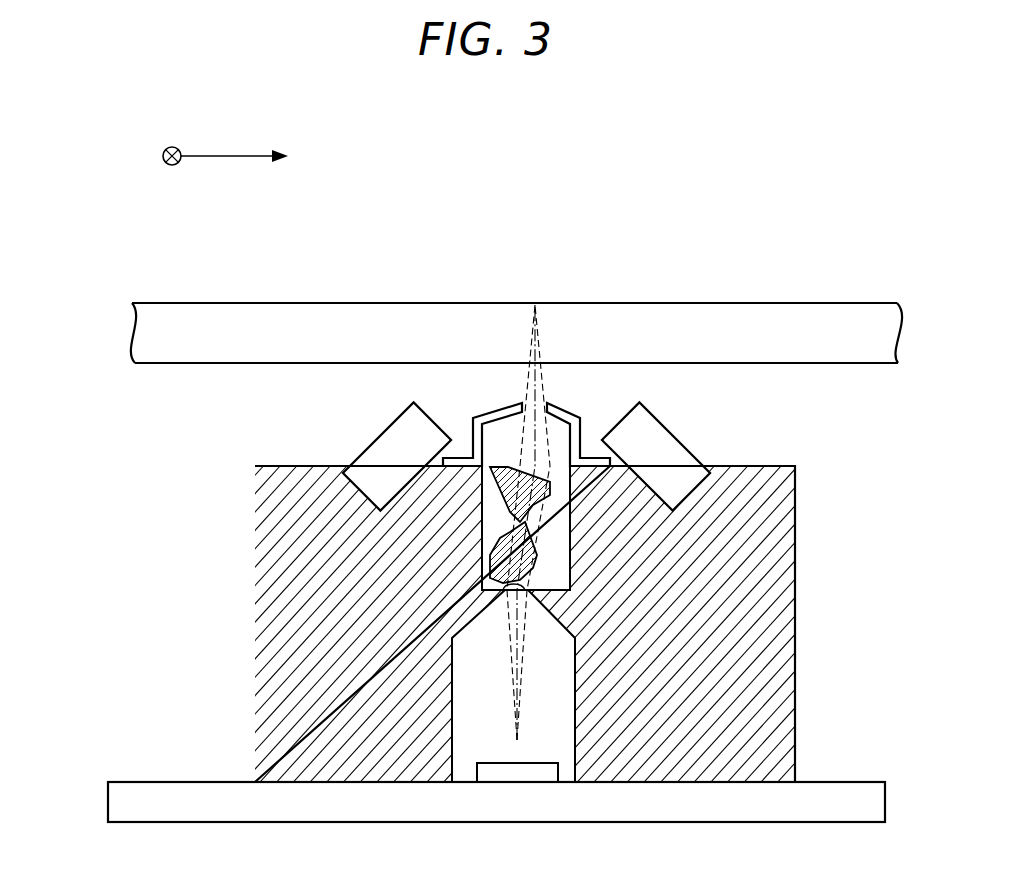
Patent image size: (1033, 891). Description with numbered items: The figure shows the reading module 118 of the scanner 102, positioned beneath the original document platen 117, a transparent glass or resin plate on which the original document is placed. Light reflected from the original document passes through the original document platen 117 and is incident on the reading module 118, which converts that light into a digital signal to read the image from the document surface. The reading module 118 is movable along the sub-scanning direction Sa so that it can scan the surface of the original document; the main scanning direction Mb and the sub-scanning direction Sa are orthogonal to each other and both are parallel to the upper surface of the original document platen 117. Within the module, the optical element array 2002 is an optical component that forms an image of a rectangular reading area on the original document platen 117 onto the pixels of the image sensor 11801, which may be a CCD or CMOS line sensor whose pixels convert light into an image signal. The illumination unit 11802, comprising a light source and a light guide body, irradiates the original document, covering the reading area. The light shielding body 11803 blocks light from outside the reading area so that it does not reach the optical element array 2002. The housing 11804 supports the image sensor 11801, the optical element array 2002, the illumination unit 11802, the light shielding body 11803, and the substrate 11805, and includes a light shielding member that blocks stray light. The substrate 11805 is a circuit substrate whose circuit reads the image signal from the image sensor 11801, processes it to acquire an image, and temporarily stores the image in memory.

The scanner 102 is at (93, 280).
The original document platen 117 is at (233, 310).
The reading module 118 is at (516, 580).
The optical element array 2002 is at (492, 545).
The image sensor 11801 is at (518, 782).
The illumination unit 11802 is at (377, 437).
The light shielding body 11803 is at (492, 412).
The housing 11804 is at (263, 690).
The substrate 11805 is at (857, 795).
The main scanning direction Mb is at (172, 146).
The sub-scanning direction Sa is at (234, 144).